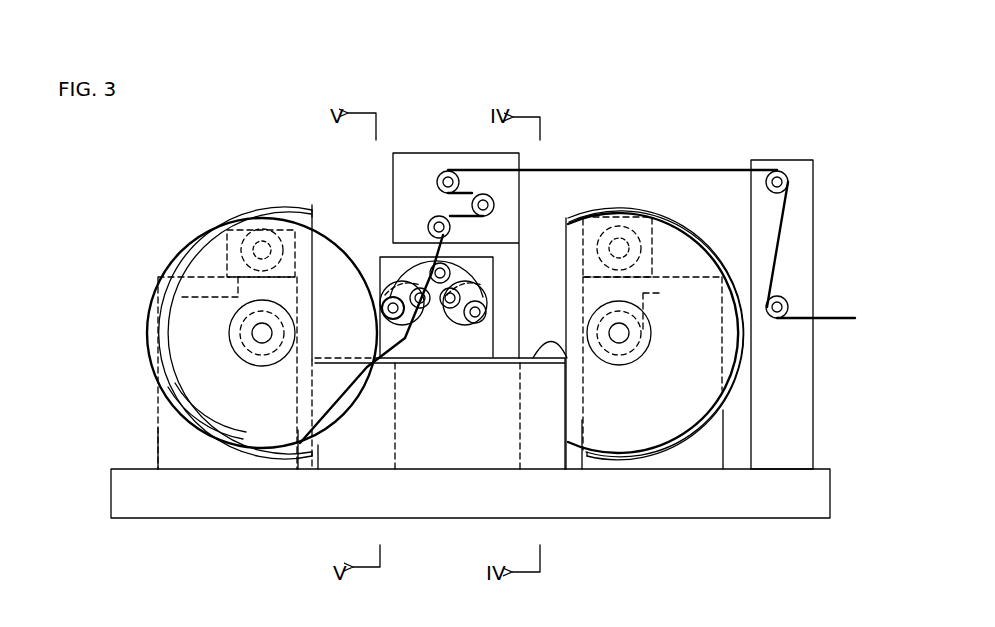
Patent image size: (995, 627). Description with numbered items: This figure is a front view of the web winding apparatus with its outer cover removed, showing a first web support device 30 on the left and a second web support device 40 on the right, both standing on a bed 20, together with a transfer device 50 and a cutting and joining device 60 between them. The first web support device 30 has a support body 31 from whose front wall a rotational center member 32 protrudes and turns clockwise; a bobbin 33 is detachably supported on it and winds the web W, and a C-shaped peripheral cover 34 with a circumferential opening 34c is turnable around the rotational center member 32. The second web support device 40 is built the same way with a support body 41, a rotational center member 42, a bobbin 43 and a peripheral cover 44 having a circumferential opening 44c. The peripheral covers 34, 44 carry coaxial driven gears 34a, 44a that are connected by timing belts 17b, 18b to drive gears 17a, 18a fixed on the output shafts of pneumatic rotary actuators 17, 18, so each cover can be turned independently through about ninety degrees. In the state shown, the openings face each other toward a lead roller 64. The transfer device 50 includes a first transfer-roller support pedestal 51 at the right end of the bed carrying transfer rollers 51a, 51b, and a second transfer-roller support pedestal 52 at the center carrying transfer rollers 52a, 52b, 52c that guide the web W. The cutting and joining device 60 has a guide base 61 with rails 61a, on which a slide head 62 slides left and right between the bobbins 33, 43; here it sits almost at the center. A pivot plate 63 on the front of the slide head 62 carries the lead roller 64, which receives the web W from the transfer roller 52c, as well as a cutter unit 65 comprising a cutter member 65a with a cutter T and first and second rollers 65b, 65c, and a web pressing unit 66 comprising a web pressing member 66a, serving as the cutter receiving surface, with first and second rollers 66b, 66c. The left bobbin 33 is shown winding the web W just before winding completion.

The pneumatic rotary actuator 17 is at (207, 227).
The drive gear 17a is at (220, 213).
The timing belt 17b is at (230, 297).
The pneumatic rotary actuator 18 is at (595, 250).
The drive gear 18a is at (587, 467).
The timing belt 18b is at (660, 293).
The bed 20 is at (790, 520).
The first web support device 30 is at (203, 212).
The support body 31 is at (160, 430).
The rotational center member 32 is at (252, 332).
The bobbin 33 is at (247, 300).
The peripheral cover 34 is at (242, 212).
The driven gear 34a is at (233, 342).
The circumferential opening 34c is at (315, 322).
The second web support device 40 is at (742, 378).
The support body 41 is at (723, 420).
The rotational center member 42 is at (630, 335).
The bobbin 43 is at (630, 307).
The peripheral cover 44 is at (670, 208).
The driven gear 44a is at (621, 365).
The circumferential opening 44c is at (563, 253).
The transfer device 50 is at (523, 190).
The first transfer-roller support pedestal 51 is at (813, 180).
The transfer roller 51a is at (790, 300).
The transfer roller 51b is at (780, 171).
The second transfer-roller support pedestal 52 is at (519, 160).
The transfer roller 52a is at (448, 171).
The transfer roller 52b is at (483, 194).
The transfer roller 52c is at (439, 216).
The cutting and joining device 60 is at (532, 462).
The guide base 61 is at (330, 453).
The rails 61a is at (585, 440).
The slide head 62 is at (495, 345).
The pivot plate 63 is at (432, 330).
The lead roller 64 is at (437, 266).
The cutter unit 65 is at (385, 292).
The cutter member 65a is at (402, 284).
The first roller 65b is at (390, 300).
The second roller 65c is at (412, 288).
The web pressing unit 66 is at (470, 320).
The web pressing member 66a is at (480, 278).
The first roller 66b is at (460, 298).
The second roller 66c is at (485, 312).
The cutter T is at (396, 268).
The web W is at (661, 170).